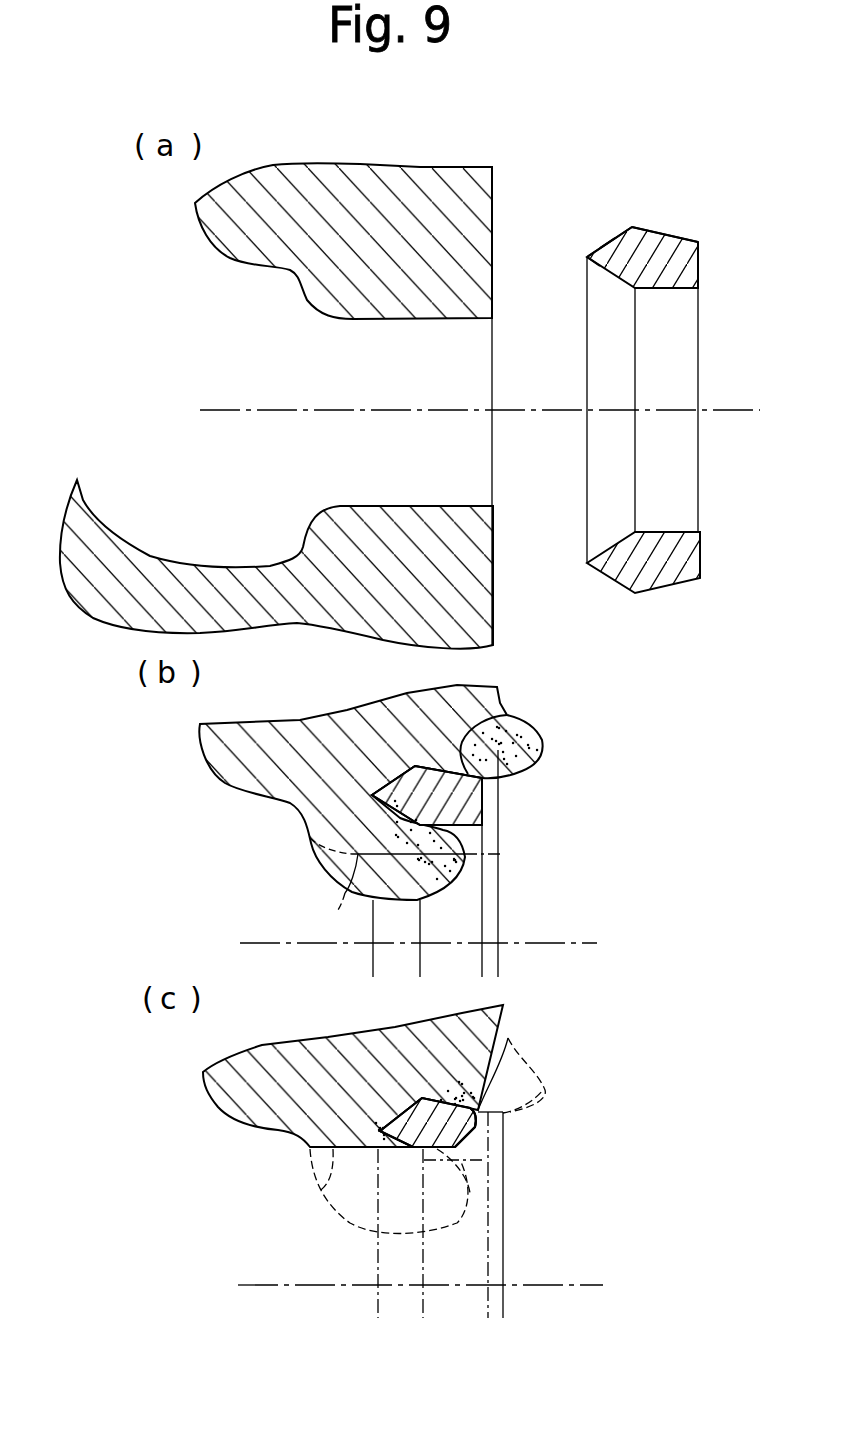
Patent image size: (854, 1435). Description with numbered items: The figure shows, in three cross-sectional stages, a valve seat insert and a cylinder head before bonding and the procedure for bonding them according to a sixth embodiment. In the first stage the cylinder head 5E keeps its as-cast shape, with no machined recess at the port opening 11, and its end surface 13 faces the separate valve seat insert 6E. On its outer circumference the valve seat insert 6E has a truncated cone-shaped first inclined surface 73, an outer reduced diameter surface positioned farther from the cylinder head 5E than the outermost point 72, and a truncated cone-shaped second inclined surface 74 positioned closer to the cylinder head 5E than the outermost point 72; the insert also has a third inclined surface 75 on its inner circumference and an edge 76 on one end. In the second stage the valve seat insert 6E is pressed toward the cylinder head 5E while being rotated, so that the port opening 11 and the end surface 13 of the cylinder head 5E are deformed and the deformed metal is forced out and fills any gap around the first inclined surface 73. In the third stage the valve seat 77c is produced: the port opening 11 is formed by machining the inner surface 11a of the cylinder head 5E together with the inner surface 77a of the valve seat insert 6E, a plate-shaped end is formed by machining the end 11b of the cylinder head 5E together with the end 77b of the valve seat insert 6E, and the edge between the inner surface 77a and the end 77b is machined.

The cylinder head 5E is at (396, 249).
The valve seat insert 6E is at (657, 228).
The end surface 13 is at (492, 197).
The port opening 11 is at (436, 320).
The outermost point 72 is at (632, 226).
The first inclined surface 73 is at (690, 237).
The second inclined surface 74 is at (606, 243).
The third inclined surface 75 is at (602, 270).
The edge 76 is at (586, 257).
The inner surface of the cylinder head 11a is at (323, 1193).
The end of the cylinder head 11b is at (510, 1068).
The inner surface of the valve seat insert 77a is at (470, 1193).
The end of the valve seat insert 77b is at (476, 1125).
The valve seat 77c is at (455, 1148).